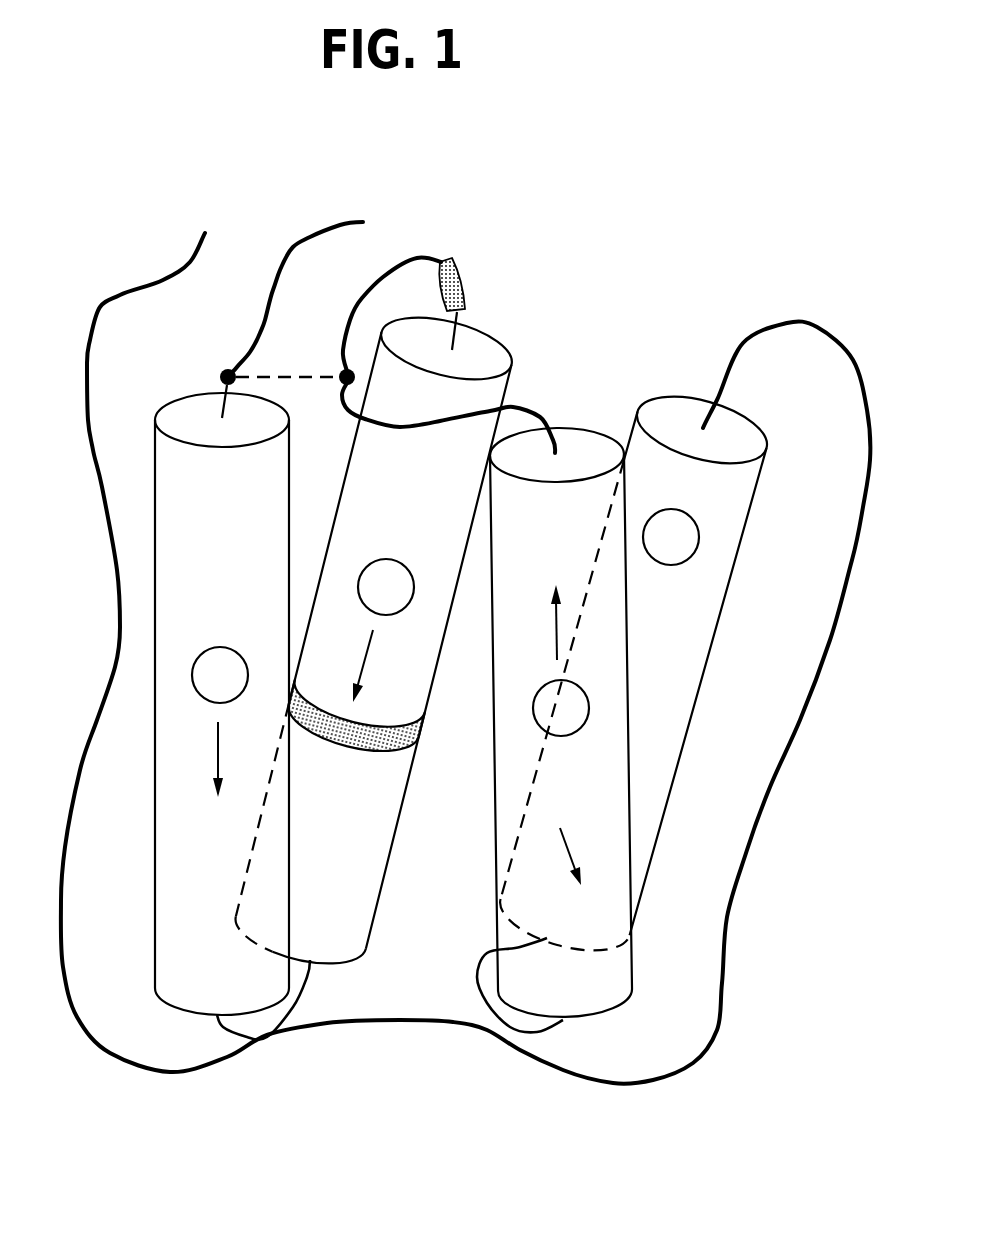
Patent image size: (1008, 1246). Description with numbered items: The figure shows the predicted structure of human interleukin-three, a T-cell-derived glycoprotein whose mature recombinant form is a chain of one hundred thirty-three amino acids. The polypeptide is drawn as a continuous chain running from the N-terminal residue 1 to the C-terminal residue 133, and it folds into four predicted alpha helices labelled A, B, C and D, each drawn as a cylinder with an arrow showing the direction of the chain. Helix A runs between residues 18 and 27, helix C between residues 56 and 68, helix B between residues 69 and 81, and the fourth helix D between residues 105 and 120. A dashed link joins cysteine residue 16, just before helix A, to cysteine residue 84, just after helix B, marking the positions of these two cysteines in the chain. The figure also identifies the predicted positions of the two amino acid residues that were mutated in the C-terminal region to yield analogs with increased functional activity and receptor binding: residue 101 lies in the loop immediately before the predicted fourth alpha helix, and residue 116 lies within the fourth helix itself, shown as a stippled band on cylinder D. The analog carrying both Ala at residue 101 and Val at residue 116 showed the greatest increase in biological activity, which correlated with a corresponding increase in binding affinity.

The N-terminus residue 1 is at (316, 288).
The cysteine residue 16 (Cys 16) 16 is at (170, 386).
The helix A start residue 18 is at (222, 704).
The helix A end residue 27 is at (255, 1000).
The helix C start residue 56 is at (638, 659).
The helix C end residue 68 is at (561, 928).
The helix B start residue 69 is at (531, 985).
The helix B end residue 81 is at (561, 722).
The cysteine residue 84 (Cys 84) 84 is at (295, 362).
The amino acid residue 101 is at (463, 273).
The helix D start residue 105 is at (377, 627).
The amino acid residue 116 is at (422, 730).
The helix D end residue 120 is at (297, 945).
The C-terminal residue 133 is at (173, 280).